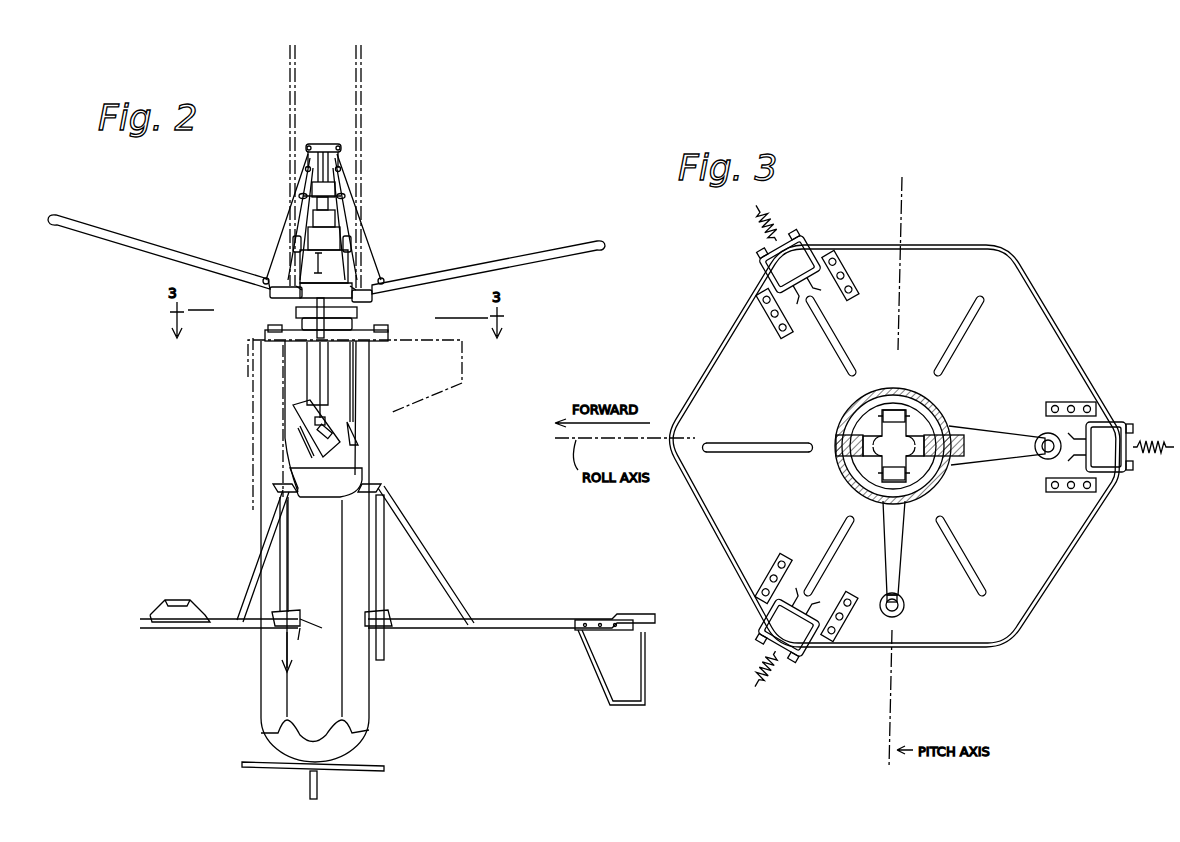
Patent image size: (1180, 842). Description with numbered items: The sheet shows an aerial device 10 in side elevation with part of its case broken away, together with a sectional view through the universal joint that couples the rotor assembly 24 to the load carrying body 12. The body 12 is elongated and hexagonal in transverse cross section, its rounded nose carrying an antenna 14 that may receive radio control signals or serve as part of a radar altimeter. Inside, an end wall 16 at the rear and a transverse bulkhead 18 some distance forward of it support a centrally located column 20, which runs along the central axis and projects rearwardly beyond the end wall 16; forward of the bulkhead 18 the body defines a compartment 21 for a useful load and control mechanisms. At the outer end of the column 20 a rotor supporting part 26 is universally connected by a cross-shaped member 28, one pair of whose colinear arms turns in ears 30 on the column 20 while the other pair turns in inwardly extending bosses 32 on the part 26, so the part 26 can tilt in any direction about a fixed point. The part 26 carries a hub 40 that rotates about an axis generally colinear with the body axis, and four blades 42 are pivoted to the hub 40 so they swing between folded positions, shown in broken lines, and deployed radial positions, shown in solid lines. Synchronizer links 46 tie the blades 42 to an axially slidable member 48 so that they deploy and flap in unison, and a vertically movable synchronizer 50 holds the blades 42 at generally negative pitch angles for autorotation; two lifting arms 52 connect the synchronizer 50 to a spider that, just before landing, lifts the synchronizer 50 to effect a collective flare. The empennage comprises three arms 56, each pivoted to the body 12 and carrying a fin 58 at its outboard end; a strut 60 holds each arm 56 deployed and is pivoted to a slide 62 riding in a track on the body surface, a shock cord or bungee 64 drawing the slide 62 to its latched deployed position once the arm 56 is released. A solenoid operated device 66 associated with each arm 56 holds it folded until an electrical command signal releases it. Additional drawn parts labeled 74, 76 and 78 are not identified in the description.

In FIG. 2, the aerial device 10 is at (454, 420).
In FIG. 2, the load carrying body 12 is at (364, 700).
In FIG. 3, the load carrying body 12 is at (930, 649).
In FIG. 2, the antenna 14 is at (330, 145).
In FIG. 2, the end wall 16 is at (345, 327).
In FIG. 3, the end wall 16 is at (735, 512).
In FIG. 2, the transverse bulkhead 18 is at (345, 465).
In FIG. 2, the column 20 is at (306, 360).
In FIG. 3, the column 20 is at (920, 418).
In FIG. 2, the compartment 21 is at (345, 483).
In FIG. 2, the rotor assembly 24 is at (421, 222).
In FIG. 2, the rotor supporting part 26 is at (352, 326).
In FIG. 3, the rotor supporting part 26 is at (930, 432).
In FIG. 3, the cross-shaped member 28 is at (905, 456).
In FIG. 3, the ears 30 is at (881, 410).
In FIG. 3, the bosses 32 is at (849, 439).
In FIG. 2, the hub 40 is at (330, 306).
In FIG. 2, the blades 42 is at (290, 88).
In FIG. 2, the synchronizer links 46 is at (288, 258).
In FIG. 2, the axially slidable member 48 is at (330, 186).
In FIG. 2, the synchronizer 50 is at (360, 273).
In FIG. 2, the lifting arms 52 is at (305, 194).
In FIG. 2, the arms 56 is at (214, 628).
In FIG. 2, the fin 58 is at (250, 384).
In FIG. 2, the strut 60 is at (262, 572).
In FIG. 2, the slide 62 is at (275, 487).
In FIG. 2, the shock cord or bungee 64 is at (384, 650).
In FIG. 3, the solenoid operated device 66 is at (800, 248).
In FIG. 3, the control arm 74 is at (990, 440).
In FIG. 2, the pivot joint / bar 76 is at (312, 378).
In FIG. 3, the pivot joint / bar 76 is at (1045, 458).
In FIG. 2, the link rod 78 is at (305, 416).